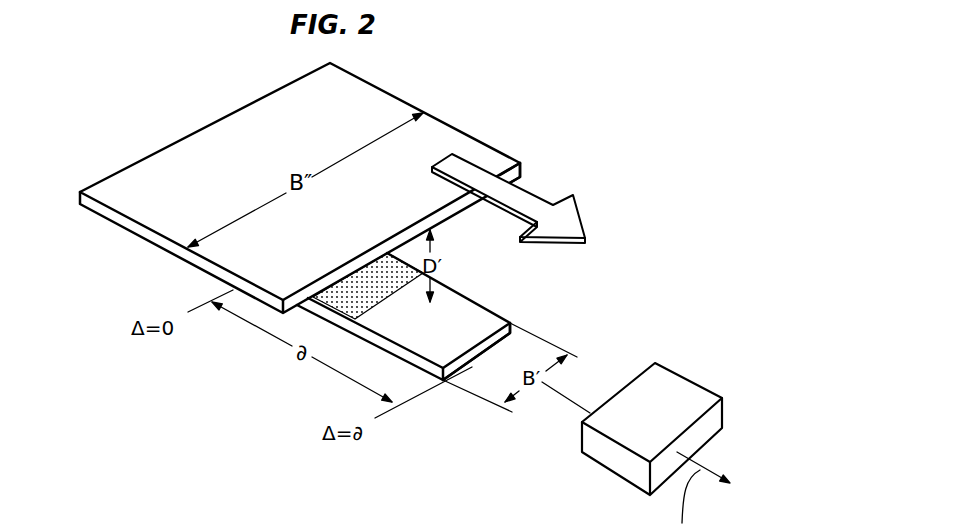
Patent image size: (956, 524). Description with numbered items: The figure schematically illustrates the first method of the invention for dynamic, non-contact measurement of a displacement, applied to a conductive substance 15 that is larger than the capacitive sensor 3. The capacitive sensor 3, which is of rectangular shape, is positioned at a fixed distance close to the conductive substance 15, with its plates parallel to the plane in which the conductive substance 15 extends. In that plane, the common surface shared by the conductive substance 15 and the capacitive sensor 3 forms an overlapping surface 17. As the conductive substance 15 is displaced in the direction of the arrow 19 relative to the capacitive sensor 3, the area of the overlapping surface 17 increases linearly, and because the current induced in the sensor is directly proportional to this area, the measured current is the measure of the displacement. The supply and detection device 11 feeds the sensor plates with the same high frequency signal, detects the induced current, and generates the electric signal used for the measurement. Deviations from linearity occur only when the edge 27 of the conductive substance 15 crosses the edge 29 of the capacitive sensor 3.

The conductive substance 15 is at (445, 133).
The edge of the conductive substance 27 is at (523, 168).
The arrow 19 is at (543, 207).
The capacitive sensor 3 is at (460, 313).
The edge of the capacitive sensor 29 is at (517, 330).
The overlapping surface 17 is at (373, 288).
The supply and detection device 11 is at (618, 420).